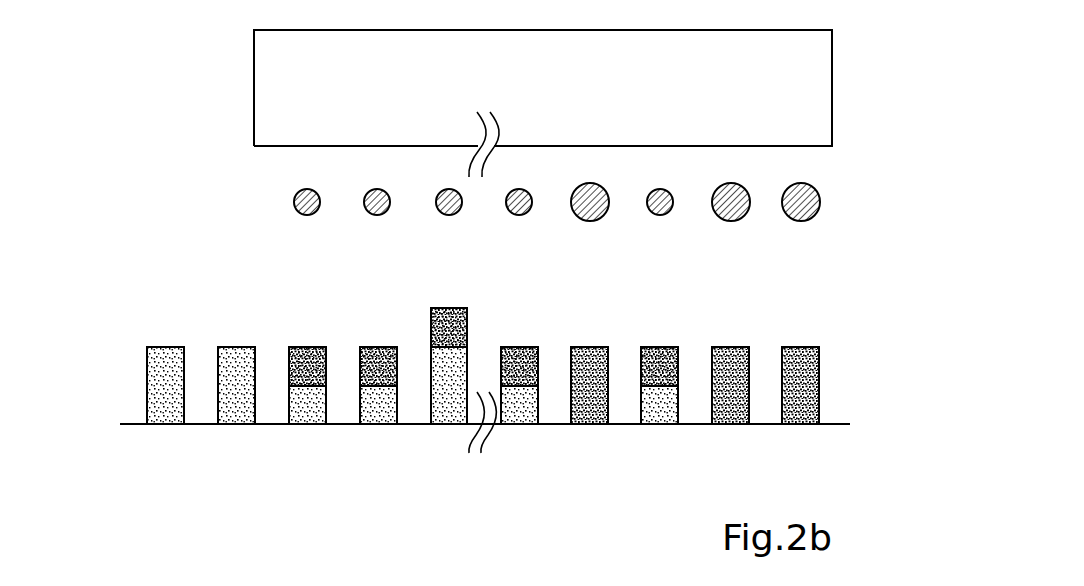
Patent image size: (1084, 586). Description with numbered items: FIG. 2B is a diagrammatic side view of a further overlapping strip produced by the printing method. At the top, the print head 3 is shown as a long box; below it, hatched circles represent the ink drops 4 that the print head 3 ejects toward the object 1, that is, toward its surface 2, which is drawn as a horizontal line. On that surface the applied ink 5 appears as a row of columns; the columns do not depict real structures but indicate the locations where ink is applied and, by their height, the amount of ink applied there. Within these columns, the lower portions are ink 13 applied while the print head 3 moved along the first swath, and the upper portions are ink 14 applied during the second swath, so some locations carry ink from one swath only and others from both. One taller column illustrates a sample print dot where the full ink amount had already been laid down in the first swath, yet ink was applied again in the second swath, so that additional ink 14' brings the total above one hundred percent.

The object 1 is at (499, 392).
The surface 2 is at (499, 392).
The print head 3 is at (254, 88).
The ink drops 4 is at (886, 202).
The print dots/ink 5 is at (886, 384).
The ink of the first swath 13 is at (660, 417).
The ink of the second swath 14 is at (483, 341).
The additional ink 14' is at (563, 341).